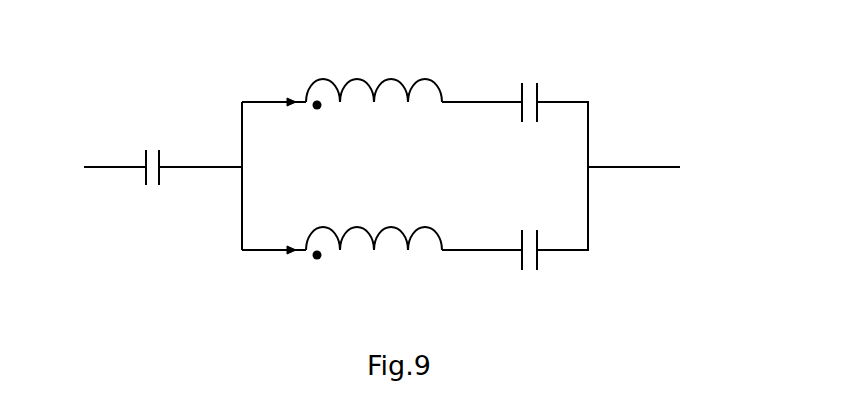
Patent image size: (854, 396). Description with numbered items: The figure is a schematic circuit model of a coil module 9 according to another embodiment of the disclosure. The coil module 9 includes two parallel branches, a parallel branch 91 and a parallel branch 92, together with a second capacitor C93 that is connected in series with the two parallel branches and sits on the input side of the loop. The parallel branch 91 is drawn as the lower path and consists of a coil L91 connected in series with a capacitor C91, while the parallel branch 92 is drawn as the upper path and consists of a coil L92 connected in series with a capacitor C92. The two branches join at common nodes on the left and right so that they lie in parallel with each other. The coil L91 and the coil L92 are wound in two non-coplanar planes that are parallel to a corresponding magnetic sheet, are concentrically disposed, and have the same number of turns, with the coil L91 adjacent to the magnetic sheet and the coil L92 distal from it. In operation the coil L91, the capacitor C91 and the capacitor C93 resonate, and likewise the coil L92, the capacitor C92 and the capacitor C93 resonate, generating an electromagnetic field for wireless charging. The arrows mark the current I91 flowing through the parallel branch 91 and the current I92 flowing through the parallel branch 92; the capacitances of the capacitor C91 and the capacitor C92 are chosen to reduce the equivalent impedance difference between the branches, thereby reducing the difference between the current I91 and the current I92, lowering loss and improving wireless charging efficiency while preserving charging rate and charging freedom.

The coil module 9 is at (382, 169).
The parallel branch 91 is at (234, 203).
The parallel branch 92 is at (237, 132).
The capacitor C91 is at (530, 89).
The capacitor C92 is at (530, 268).
The second capacitor C93 is at (148, 186).
The coil L91 is at (374, 259).
The coil L92 is at (374, 74).
The current I91 is at (284, 266).
The current I92 is at (287, 93).